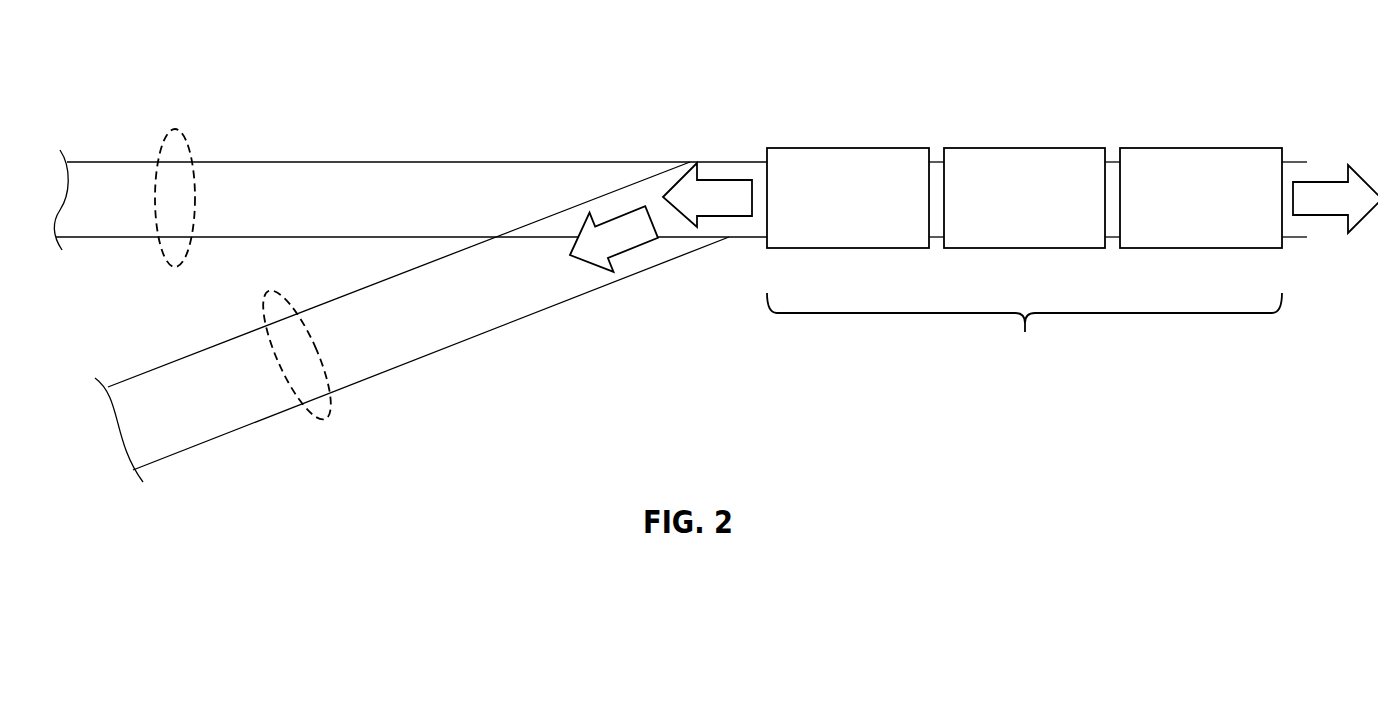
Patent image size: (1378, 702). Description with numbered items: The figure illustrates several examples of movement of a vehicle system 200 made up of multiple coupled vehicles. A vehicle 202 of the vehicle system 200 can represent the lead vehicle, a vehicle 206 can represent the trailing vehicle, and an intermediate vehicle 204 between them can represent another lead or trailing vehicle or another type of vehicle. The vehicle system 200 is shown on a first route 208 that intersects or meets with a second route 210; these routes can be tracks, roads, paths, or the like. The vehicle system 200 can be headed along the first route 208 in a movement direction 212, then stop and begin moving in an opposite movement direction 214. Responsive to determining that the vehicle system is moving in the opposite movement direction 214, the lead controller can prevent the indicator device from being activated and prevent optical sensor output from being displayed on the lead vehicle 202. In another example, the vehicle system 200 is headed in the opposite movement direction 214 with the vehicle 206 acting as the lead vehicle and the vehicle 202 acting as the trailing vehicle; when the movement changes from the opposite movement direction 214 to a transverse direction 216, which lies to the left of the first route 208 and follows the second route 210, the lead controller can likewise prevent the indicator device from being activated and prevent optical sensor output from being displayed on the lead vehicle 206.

The vehicle system 200 is at (1024, 328).
The vehicle 202 is at (1190, 147).
The intermediate vehicle 204 is at (1012, 145).
The vehicle 206 is at (850, 145).
The first route 208 is at (182, 133).
The second route 210 is at (282, 298).
The movement direction 212 is at (1327, 180).
The opposite movement direction 214 is at (713, 178).
The transverse direction 216 is at (627, 248).